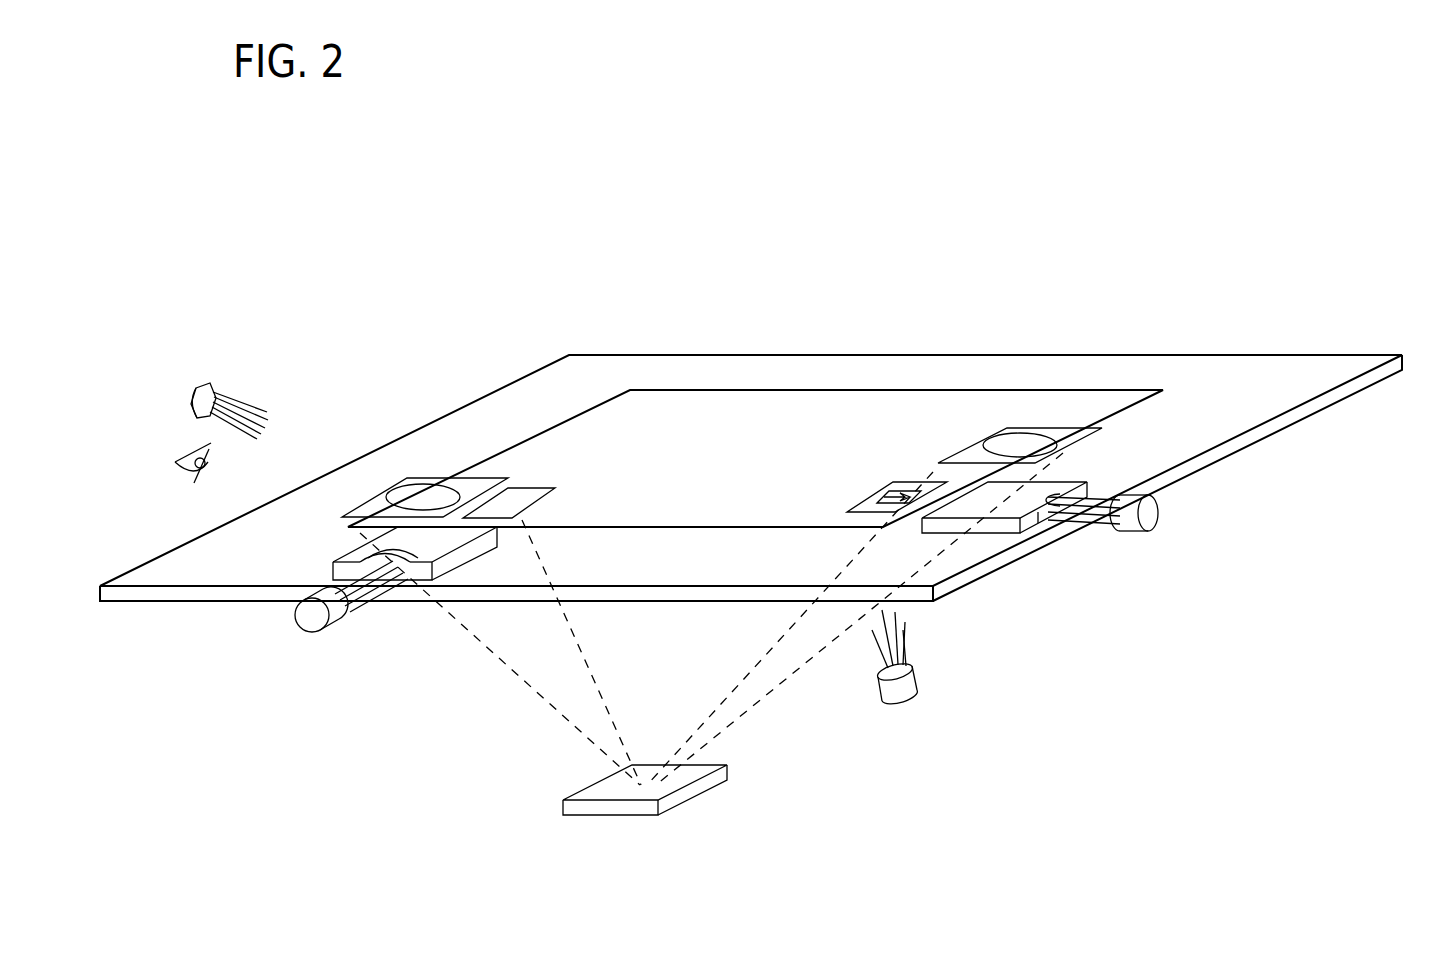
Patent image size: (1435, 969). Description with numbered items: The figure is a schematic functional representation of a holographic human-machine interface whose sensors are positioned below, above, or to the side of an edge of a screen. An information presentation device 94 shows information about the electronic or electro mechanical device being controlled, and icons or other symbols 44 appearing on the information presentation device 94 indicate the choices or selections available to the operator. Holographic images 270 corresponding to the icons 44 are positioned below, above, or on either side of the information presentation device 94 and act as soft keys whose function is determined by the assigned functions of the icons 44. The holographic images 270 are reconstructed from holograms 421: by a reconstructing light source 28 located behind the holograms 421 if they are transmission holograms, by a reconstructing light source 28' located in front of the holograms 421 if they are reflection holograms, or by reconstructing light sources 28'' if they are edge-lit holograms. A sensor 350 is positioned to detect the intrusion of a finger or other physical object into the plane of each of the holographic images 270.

The reconstructing light source 28 is at (933, 693).
The reconstructing light source 28' is at (229, 362).
The reconstructing light sources 28'' is at (717, 614).
The icons 44 is at (538, 493).
The information presentation device 94 is at (1137, 397).
The holographic images 270 is at (427, 480).
The sensor 350 is at (692, 793).
The holograms 421 is at (357, 563).